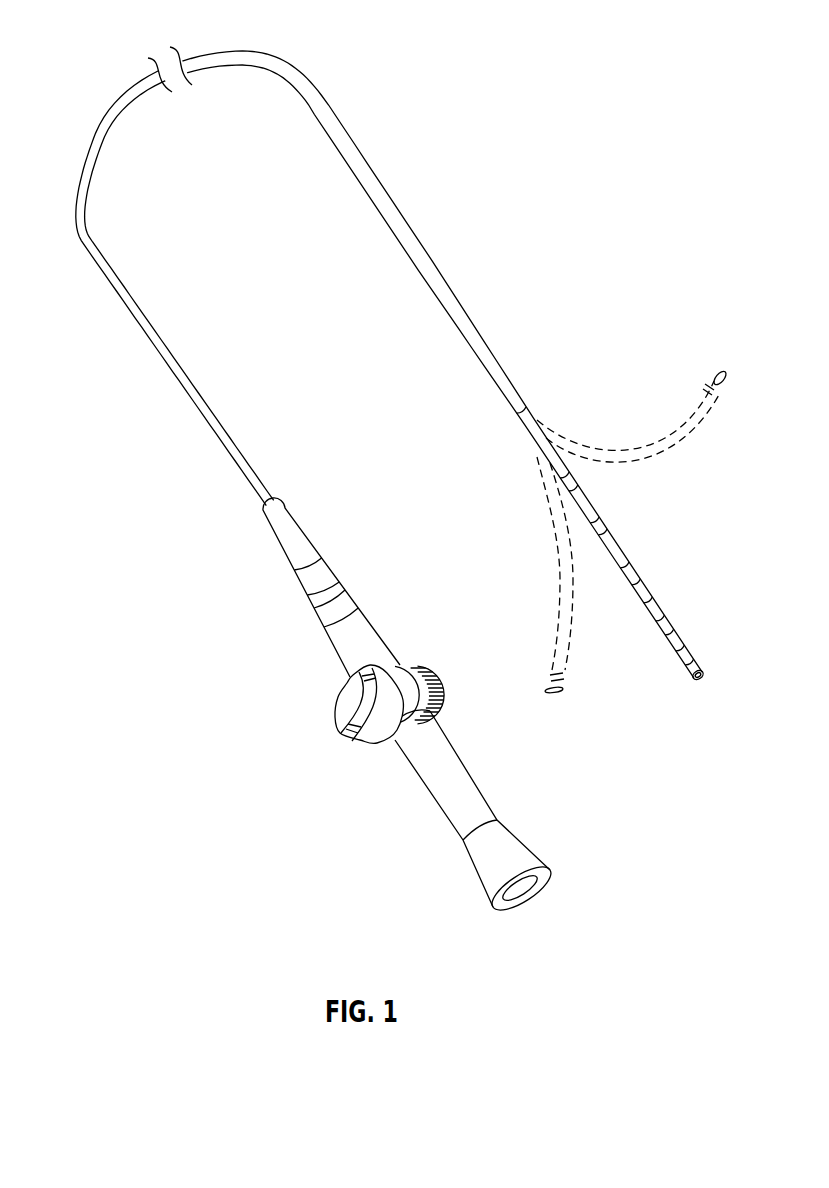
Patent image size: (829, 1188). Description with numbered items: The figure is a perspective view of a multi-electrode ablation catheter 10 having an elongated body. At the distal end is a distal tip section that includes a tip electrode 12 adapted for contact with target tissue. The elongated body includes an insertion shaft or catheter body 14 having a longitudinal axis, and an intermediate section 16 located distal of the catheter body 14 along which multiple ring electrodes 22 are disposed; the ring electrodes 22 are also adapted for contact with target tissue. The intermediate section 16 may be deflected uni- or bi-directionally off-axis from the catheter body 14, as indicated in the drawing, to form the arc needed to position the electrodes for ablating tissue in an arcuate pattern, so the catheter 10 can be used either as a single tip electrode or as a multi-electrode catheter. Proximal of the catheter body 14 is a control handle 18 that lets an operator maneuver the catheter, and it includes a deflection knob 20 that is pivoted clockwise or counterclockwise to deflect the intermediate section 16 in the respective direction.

The multi-electrode ablation catheter 10 is at (414, 43).
The tip electrode 12 is at (688, 672).
The catheter body 14 is at (94, 147).
The intermediate section 16 is at (590, 507).
The control handle 18 is at (428, 796).
The deflection knob 20 is at (335, 737).
The ring electrodes 22 is at (637, 570).